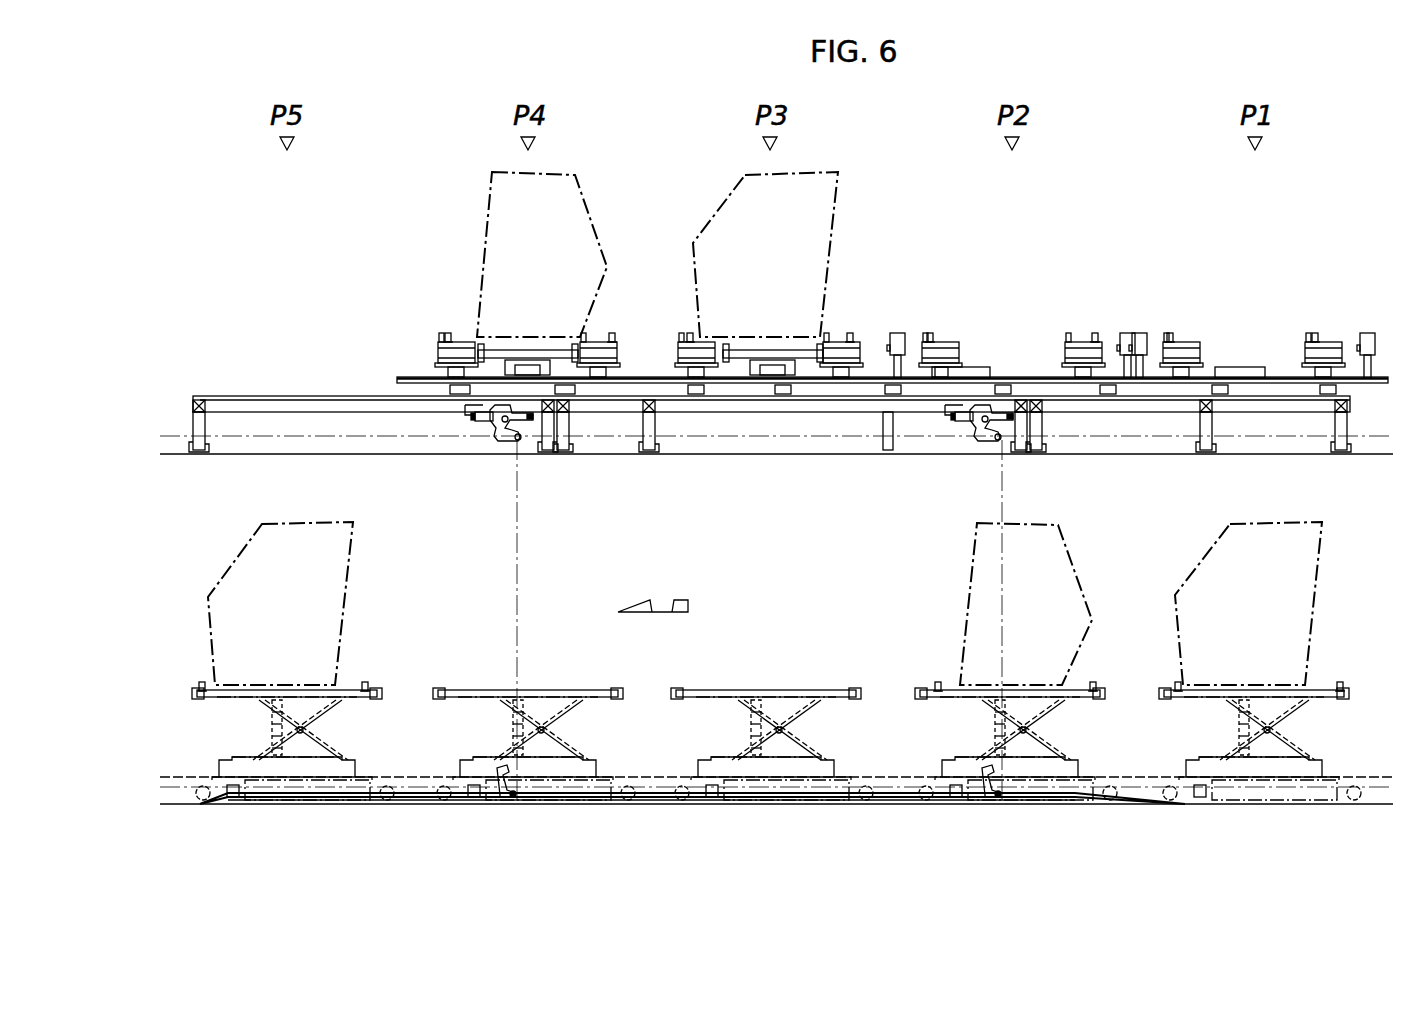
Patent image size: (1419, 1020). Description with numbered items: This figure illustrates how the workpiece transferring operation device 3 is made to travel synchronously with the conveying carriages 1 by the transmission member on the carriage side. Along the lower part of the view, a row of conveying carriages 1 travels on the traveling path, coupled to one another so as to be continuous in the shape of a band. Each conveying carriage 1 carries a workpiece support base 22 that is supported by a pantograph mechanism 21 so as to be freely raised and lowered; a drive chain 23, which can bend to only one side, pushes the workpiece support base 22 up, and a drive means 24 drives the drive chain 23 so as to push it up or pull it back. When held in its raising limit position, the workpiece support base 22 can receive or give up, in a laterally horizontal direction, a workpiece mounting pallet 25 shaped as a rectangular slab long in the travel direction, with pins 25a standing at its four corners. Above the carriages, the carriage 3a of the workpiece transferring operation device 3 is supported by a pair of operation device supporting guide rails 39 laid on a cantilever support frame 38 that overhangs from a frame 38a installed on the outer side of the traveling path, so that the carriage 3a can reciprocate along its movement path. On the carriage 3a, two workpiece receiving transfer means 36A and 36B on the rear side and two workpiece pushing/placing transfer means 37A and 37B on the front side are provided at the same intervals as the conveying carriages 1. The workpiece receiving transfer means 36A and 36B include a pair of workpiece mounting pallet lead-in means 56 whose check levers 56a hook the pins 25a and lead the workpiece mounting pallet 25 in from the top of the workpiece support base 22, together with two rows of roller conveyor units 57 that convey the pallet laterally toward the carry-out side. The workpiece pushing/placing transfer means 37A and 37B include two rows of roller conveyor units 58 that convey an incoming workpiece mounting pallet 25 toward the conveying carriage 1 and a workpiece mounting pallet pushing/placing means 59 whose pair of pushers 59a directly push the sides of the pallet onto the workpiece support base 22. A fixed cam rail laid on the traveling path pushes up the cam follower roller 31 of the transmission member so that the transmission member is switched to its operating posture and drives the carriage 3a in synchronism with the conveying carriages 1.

The conveying carriage 1 is at (197, 775).
The workpiece transferring operation device 3 is at (877, 378).
The carriage 3a is at (415, 378).
The pantograph mechanism 21 is at (318, 728).
The workpiece support base 22 is at (290, 697).
The drive chain 23 is at (272, 738).
The drive means 24 is at (332, 800).
The workpiece mounting pallet 25 is at (590, 340).
The pins 25a is at (448, 335).
The cam follower roller 31 is at (497, 797).
The workpiece receiving transfer means 36A is at (1010, 345).
The workpiece receiving transfer means 36B is at (1253, 345).
The workpiece pushing/placing transfer means 37A is at (535, 350).
The workpiece pushing/placing transfer means 37B is at (780, 350).
The cantilever support frame 38 is at (330, 396).
The frame 38a is at (205, 425).
The operation device supporting guide rails 39 is at (285, 396).
The workpiece mounting pallet lead-in means 56 is at (898, 333).
The check levers 56a is at (940, 342).
The roller conveyor units 57 is at (1070, 350).
The roller conveyor units 58 is at (455, 342).
The workpiece mounting pallet pushing/placing means 59 is at (505, 345).
The pushers 59a is at (480, 340).